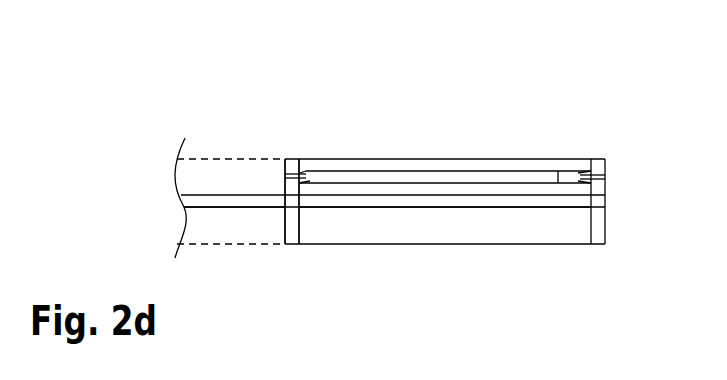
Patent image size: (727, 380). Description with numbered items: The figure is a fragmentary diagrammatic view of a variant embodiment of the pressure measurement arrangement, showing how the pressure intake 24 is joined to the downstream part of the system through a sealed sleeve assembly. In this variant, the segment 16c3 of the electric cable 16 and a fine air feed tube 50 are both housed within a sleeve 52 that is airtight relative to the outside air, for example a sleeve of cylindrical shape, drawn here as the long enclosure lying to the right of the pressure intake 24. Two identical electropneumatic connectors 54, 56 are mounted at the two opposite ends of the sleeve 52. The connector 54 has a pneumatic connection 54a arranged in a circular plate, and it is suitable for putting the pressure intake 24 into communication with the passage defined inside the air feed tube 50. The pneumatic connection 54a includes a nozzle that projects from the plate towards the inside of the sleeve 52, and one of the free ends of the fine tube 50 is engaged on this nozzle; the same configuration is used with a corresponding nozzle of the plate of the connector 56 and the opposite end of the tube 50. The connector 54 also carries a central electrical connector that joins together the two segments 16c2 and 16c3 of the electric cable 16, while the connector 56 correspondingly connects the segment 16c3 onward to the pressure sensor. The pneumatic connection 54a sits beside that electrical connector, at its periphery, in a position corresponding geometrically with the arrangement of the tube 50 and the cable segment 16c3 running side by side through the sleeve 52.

The static pressure intake 24 is at (212, 150).
The electric cable 16 is at (438, 217).
The cable segment 16c2 is at (255, 207).
The cable segment 16c3 is at (505, 207).
The sleeve 52 is at (372, 159).
The air feed tube 50 is at (485, 162).
The electropneumatic connector 54 is at (297, 159).
The pneumatic connection 54a is at (282, 164).
The electropneumatic connector 56 is at (597, 159).